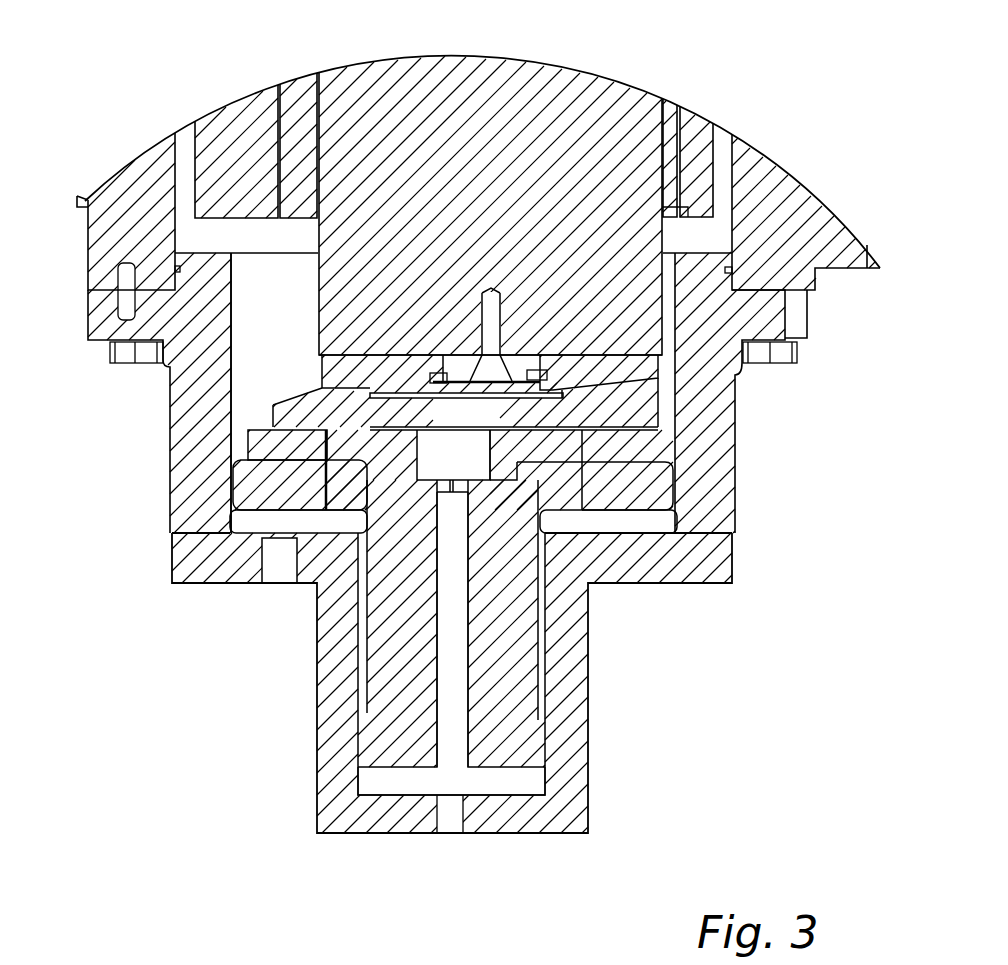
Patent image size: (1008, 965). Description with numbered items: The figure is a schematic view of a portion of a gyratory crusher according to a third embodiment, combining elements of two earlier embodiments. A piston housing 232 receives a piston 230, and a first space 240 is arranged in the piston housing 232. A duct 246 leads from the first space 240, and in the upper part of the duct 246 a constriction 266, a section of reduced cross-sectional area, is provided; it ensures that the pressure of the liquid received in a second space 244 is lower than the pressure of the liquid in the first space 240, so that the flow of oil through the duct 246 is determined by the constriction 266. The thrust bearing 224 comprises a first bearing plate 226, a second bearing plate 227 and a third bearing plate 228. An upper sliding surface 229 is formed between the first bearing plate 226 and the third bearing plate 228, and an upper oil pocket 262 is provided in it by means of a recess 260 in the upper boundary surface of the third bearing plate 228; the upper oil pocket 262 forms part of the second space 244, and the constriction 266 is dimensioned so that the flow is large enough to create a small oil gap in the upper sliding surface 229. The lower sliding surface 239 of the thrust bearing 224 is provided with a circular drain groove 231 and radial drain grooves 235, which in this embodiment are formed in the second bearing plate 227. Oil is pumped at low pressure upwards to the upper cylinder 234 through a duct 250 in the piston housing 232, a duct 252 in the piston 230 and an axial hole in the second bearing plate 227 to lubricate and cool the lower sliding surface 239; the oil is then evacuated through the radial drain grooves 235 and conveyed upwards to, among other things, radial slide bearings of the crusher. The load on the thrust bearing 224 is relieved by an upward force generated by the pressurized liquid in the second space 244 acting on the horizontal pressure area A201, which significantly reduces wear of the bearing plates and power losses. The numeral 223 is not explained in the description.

The upper oil pocket 262 is at (402, 397).
The horizontal pressure area A201 is at (545, 380).
The recess 260 is at (542, 374).
The first bearing plate 226 is at (370, 373).
The thrust bearing 224 is at (318, 383).
The upper sliding surface 229 is at (285, 366).
The third bearing plate 228 is at (303, 410).
The lower sliding surface 239 is at (287, 437).
The second bearing plate 227 is at (262, 440).
The upper cylinder 234 is at (180, 508).
The piston housing 232 is at (177, 552).
The duct 250 is at (282, 582).
The duct 246 is at (443, 655).
The first space 240 is at (385, 785).
The block 223 is at (637, 323).
The circular drain groove 231 is at (582, 427).
The radial drain grooves 235 is at (630, 437).
The duct 252 is at (510, 423).
The second space 244 is at (480, 490).
The piston 230 is at (513, 618).
The constriction 266 is at (470, 490).